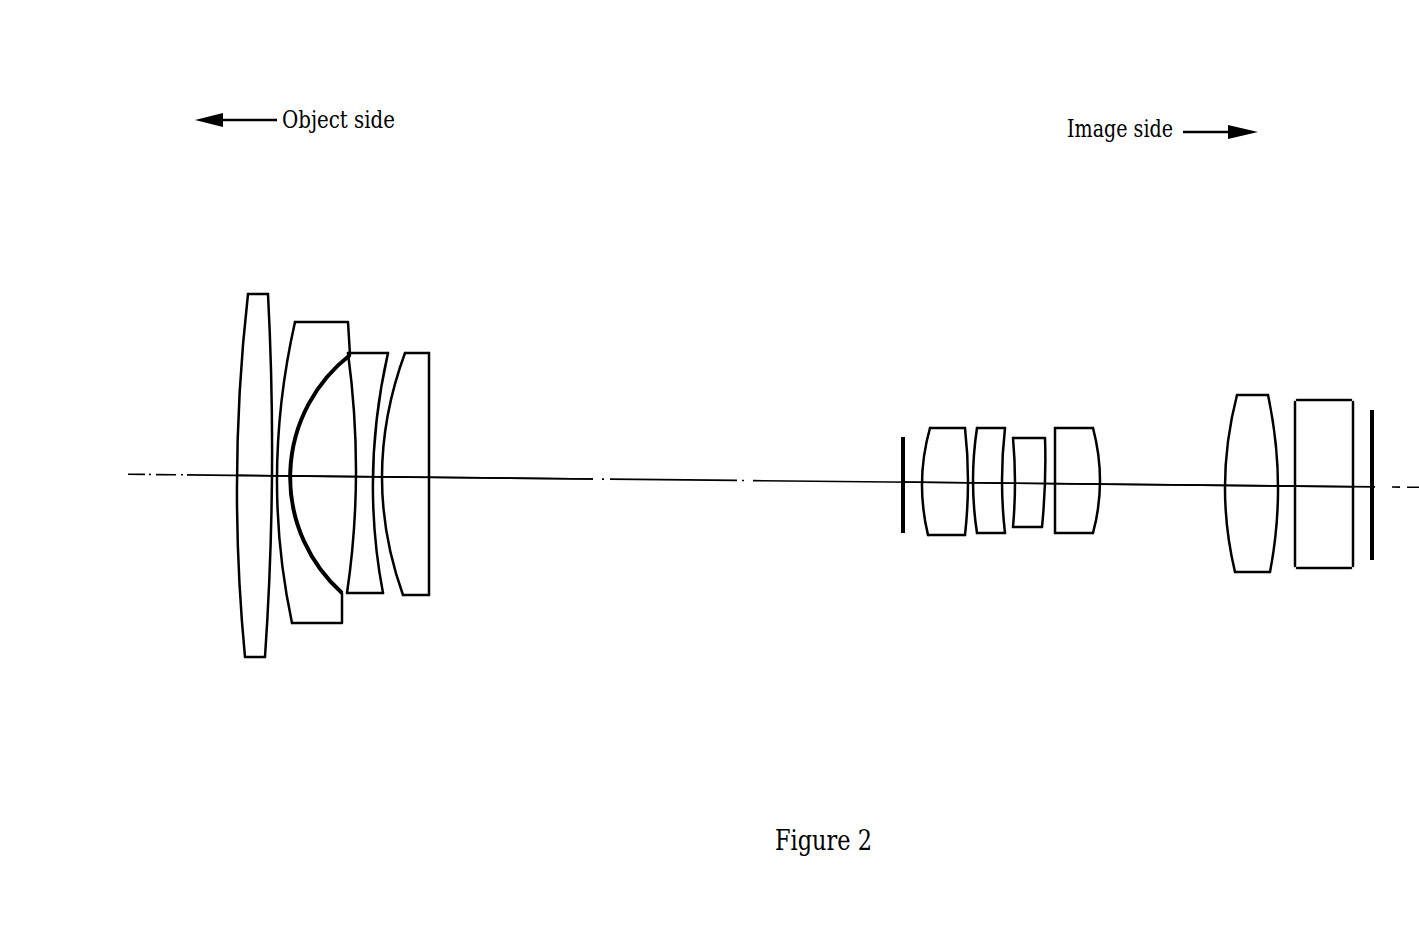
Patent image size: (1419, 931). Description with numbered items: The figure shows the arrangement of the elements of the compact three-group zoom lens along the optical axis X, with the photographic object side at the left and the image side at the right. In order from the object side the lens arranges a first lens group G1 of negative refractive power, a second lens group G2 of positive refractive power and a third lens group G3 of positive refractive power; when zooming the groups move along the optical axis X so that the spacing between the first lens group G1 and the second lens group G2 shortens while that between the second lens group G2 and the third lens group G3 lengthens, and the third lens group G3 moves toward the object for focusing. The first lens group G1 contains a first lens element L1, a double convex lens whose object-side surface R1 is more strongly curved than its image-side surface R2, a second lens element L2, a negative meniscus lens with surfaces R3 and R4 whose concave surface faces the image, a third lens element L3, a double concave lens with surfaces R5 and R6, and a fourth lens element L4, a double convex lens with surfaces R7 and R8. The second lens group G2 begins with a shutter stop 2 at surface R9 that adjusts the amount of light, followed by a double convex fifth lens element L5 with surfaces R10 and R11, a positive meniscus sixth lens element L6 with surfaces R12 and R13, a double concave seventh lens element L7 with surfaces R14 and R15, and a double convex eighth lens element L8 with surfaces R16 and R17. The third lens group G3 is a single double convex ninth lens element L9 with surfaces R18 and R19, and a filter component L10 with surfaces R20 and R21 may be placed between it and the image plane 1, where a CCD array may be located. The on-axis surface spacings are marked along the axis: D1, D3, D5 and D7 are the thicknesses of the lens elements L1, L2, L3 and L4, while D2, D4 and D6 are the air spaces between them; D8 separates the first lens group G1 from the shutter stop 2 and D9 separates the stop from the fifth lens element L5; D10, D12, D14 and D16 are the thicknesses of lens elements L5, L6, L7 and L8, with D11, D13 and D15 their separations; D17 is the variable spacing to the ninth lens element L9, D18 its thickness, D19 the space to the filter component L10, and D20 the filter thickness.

The optical axis X is at (191, 476).
The image plane 1 is at (1371, 410).
The shutter stop 2 is at (898, 517).
The first lens group G1 is at (448, 255).
The second lens group G2 is at (1126, 273).
The third lens group G3 is at (1287, 277).
The first lens element L1 is at (233, 476).
The second lens element L2 is at (313, 480).
The third lens element L3 is at (394, 478).
The fourth lens element L4 is at (437, 464).
The fifth lens element L5 is at (928, 469).
The sixth lens element L6 is at (1009, 475).
The seventh lens element L7 is at (1064, 470).
The eighth lens element L8 is at (1110, 467).
The ninth lens element L9 is at (1234, 483).
The filter component L10 is at (1340, 482).
The radius of curvature of the first surface R1 is at (240, 627).
The radius of curvature of the second surface R2 is at (265, 650).
The radius of curvature of the third surface R3 is at (289, 610).
The radius of curvature of the fourth surface R4 is at (328, 560).
The radius of curvature of the fifth surface R5 is at (347, 563).
The radius of curvature of the sixth surface R6 is at (380, 575).
The radius of curvature of the seventh surface R7 is at (395, 560).
The radius of curvature of the eighth surface R8 is at (430, 542).
The radius of curvature of the ninth surface R9 is at (901, 501).
The radius of curvature of the tenth surface R10 is at (925, 521).
The radius of curvature of the eleventh surface R11 is at (967, 528).
The radius of curvature of the twelfth surface R12 is at (978, 530).
The radius of curvature of the thirteenth surface R13 is at (1004, 535).
The radius of curvature of the fourteenth surface R14 is at (1015, 530).
The radius of curvature of the fifteenth surface R15 is at (1047, 508).
The radius of curvature of the sixteenth surface R16 is at (1058, 507).
The radius of curvature of the seventeenth surface R17 is at (1097, 507).
The radius of curvature of the eighteenth surface R18 is at (1230, 542).
The radius of curvature of the nineteenth surface R19 is at (1272, 562).
The radius of curvature of the twentieth surface R20 is at (1294, 550).
The radius of curvature of the twenty-first surface R21 is at (1358, 553).
The on-axis surface spacing D1 is at (246, 476).
The on-axis surface spacing D2 is at (268, 466).
The on-axis surface spacing D3 is at (280, 473).
The on-axis surface spacing D4 is at (305, 475).
The on-axis surface spacing D5 is at (368, 470).
The on-axis surface spacing D6 is at (393, 474).
The on-axis surface spacing D7 is at (405, 473).
The on-axis surface spacing D8 is at (586, 478).
The on-axis surface spacing D9 is at (912, 482).
The on-axis surface spacing D10 is at (932, 482).
The on-axis surface spacing D11 is at (965, 482).
The on-axis surface spacing D12 is at (990, 483).
The on-axis surface spacing D13 is at (1020, 482).
The on-axis surface spacing D14 is at (1060, 452).
The on-axis surface spacing D15 is at (1063, 472).
The on-axis surface spacing D16 is at (1067, 474).
The on-axis surface spacing D17 is at (1184, 485).
The on-axis surface spacing D18 is at (1259, 483).
The on-axis surface spacing D19 is at (1285, 489).
The on-axis surface spacing D20 is at (1322, 486).